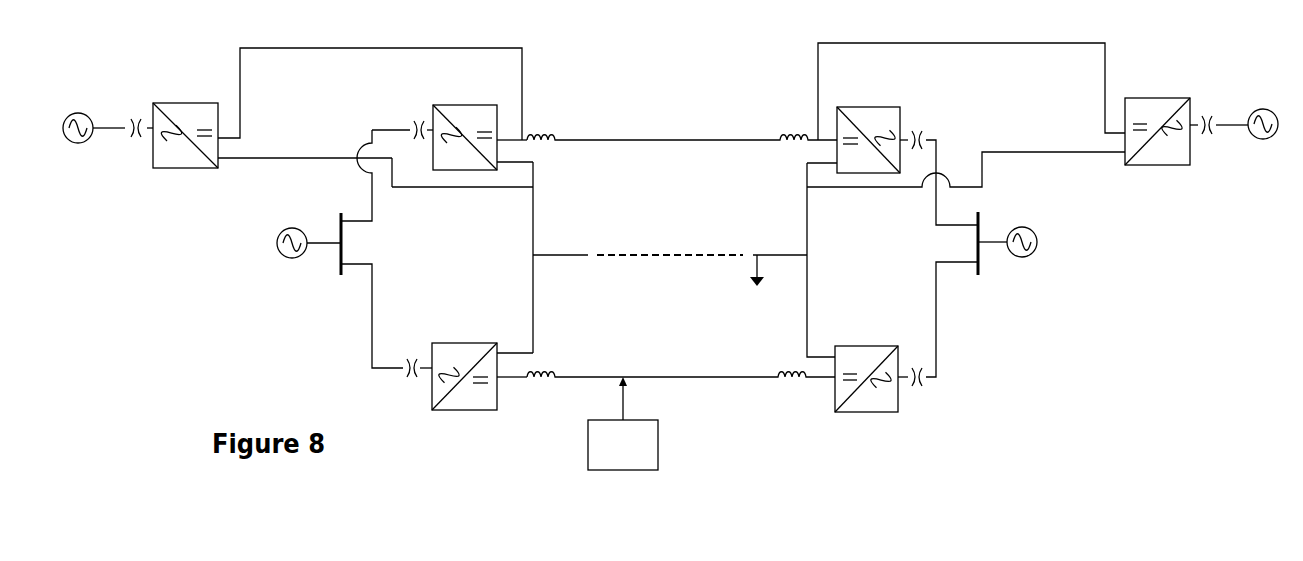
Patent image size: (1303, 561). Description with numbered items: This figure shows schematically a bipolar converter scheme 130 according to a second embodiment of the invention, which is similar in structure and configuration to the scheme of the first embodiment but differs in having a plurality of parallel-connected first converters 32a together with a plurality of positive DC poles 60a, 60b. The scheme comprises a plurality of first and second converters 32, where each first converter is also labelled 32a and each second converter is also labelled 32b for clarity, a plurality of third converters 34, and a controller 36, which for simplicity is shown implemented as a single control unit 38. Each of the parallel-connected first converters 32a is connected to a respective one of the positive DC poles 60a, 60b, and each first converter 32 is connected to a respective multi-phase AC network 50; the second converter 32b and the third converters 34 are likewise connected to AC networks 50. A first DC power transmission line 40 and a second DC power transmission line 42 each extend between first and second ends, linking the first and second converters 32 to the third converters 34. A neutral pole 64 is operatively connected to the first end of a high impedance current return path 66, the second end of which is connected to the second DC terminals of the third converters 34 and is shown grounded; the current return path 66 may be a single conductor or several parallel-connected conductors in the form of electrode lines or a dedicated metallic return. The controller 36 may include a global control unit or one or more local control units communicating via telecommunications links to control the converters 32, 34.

The first and second converters 32 is at (336, 256).
The first converter 32a is at (190, 160).
The second converter 32b is at (460, 350).
The third converter 34 is at (872, 163).
The controller 36 is at (579, 446).
The control unit 38 is at (637, 458).
The first DC power transmission line 40 is at (667, 135).
The second DC power transmission line 42 is at (671, 369).
The multi-phase AC network 50 is at (78, 108).
The positive DC pole 60a is at (223, 136).
The positive DC pole 60b is at (500, 137).
The neutral pole 64 is at (538, 251).
The current return path 66 is at (674, 245).
The bipolar converter scheme 130 is at (255, 310).